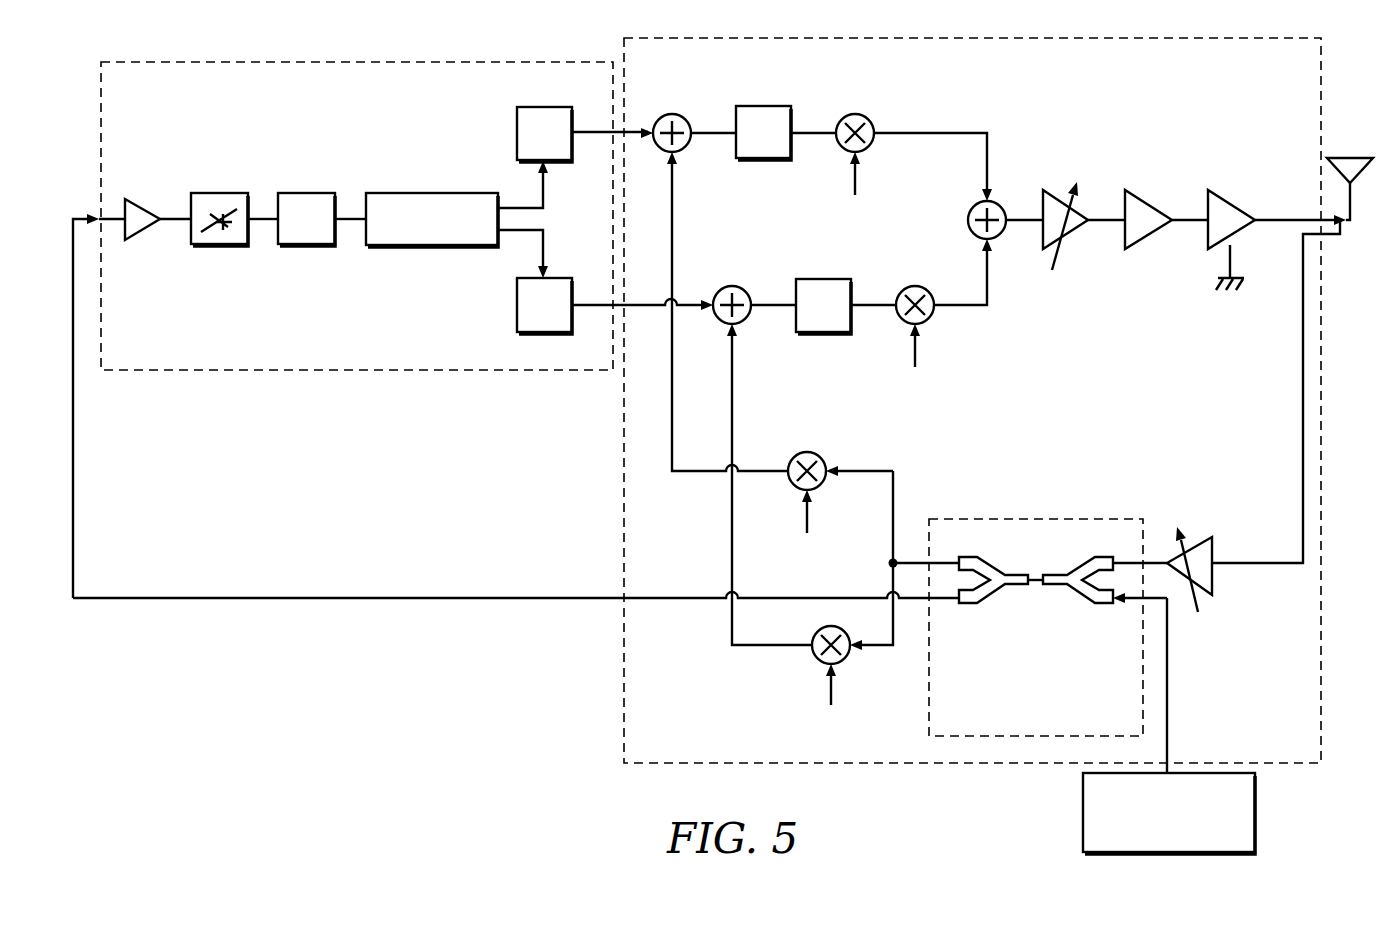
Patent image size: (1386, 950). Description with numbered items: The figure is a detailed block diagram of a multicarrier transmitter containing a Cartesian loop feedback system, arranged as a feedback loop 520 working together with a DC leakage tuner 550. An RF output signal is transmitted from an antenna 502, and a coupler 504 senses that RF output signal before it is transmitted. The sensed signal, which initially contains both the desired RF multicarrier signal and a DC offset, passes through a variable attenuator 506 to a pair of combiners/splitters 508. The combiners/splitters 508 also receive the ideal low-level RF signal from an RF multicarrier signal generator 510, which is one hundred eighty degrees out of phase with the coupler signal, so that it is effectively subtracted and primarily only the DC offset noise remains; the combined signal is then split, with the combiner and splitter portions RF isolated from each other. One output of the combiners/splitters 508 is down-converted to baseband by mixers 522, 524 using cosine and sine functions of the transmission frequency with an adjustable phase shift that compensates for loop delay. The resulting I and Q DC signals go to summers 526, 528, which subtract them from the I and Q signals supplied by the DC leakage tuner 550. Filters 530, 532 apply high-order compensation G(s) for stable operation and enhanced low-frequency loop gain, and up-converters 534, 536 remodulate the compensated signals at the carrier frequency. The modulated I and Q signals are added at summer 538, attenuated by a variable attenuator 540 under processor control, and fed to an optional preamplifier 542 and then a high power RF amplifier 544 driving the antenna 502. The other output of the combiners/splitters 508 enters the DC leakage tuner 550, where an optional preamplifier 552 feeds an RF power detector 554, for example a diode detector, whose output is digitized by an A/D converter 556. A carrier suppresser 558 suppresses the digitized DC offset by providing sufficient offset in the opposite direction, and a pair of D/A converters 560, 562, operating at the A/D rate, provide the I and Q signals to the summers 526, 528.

The antenna 502 is at (1350, 158).
The coupler 504 is at (1303, 236).
The variable attenuator (/amplifier) 506 is at (1205, 537).
The combiners/splitters 508 is at (1095, 519).
The RF multicarrier signal generator 510 is at (1255, 803).
The feedback loop 520 is at (1265, 39).
The down-converter (mixer) 522 is at (807, 452).
The down-converter (mixer) 524 is at (838, 628).
The summer 526 is at (672, 114).
The summer 528 is at (732, 286).
The filter 530 is at (765, 158).
The filter 532 is at (823, 279).
The up-converter (mixer) 534 is at (855, 114).
The up-converter (mixer) 536 is at (915, 286).
The summer 538 is at (968, 207).
The variable attenuator 540 is at (1055, 195).
The preamplifier 542 is at (1125, 235).
The high power RF amplifier 544 is at (1208, 238).
The DC leakage tuner 550 is at (540, 62).
The preamplifier 552 is at (143, 199).
The RF power detector 554 is at (220, 193).
The analog-to-digital (A/D) converter 556 is at (305, 193).
The carrier suppresser 558 is at (432, 193).
The digital-to-analog (D/A) converter 560 is at (545, 107).
The digital-to-analog (D/A) converter 562 is at (517, 305).